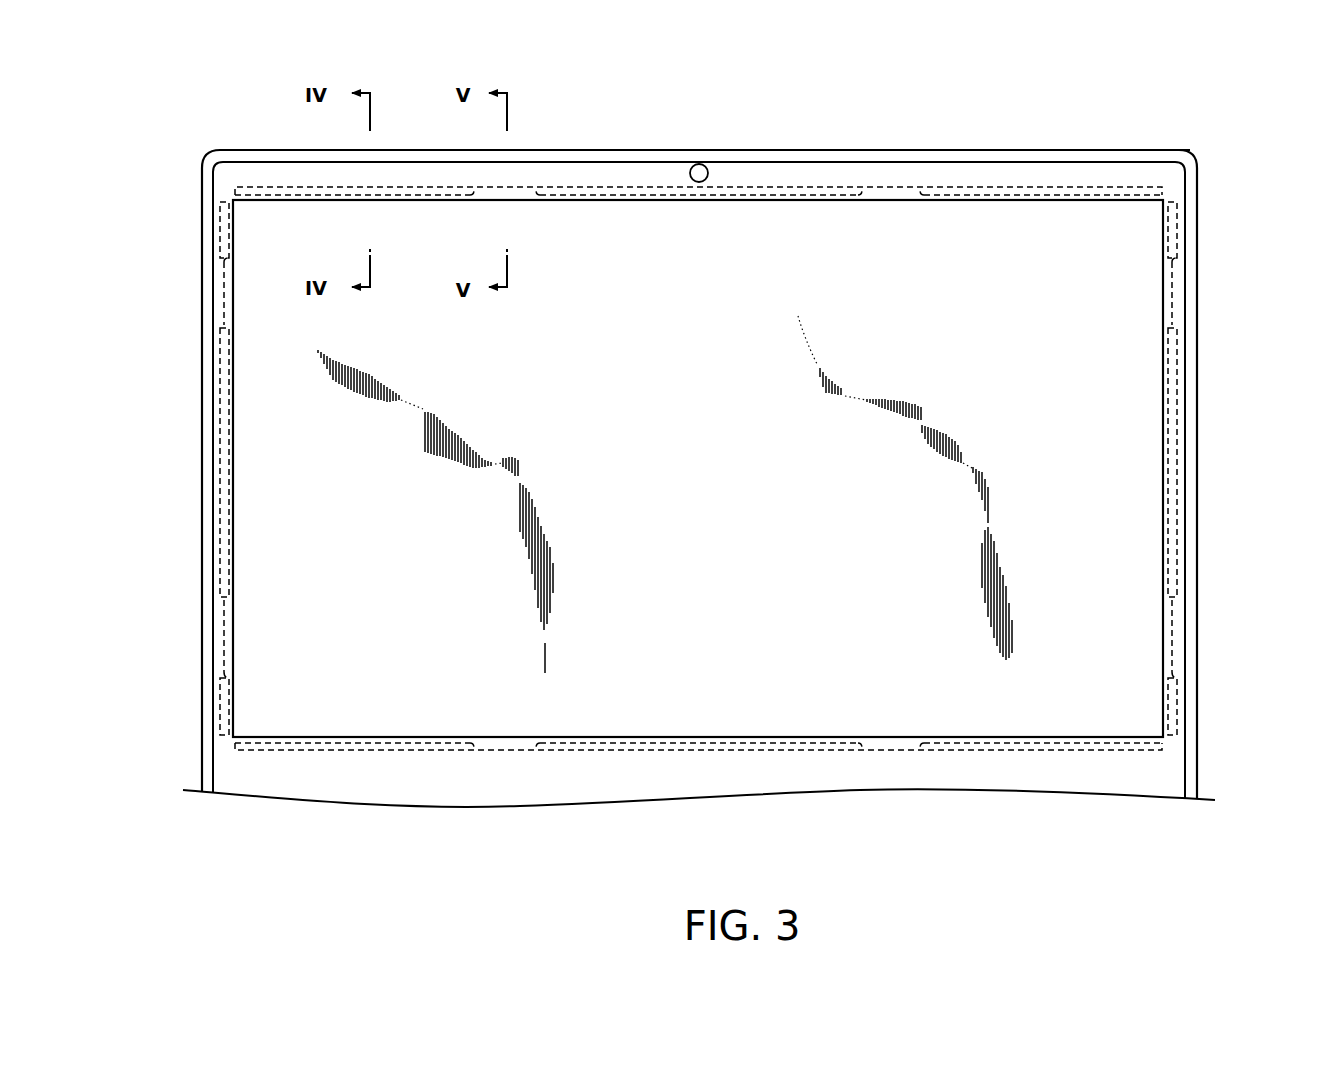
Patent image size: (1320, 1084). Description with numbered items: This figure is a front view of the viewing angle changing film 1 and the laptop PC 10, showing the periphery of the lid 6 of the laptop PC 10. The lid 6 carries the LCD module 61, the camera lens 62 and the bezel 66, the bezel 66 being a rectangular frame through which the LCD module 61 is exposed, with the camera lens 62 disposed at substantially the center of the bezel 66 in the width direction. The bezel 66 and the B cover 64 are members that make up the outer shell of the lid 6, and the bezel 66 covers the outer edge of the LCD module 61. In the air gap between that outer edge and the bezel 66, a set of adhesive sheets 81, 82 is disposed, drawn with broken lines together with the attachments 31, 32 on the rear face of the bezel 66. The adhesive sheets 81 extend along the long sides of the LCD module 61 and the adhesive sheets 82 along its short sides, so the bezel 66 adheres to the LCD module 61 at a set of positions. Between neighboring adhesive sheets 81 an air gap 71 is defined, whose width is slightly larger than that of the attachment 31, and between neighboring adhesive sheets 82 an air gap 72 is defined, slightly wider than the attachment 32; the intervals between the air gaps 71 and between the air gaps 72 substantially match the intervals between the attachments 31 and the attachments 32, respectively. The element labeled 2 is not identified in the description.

The laptop PC 10 is at (207, 116).
The lid 6 is at (1186, 139).
The B cover 64 is at (1195, 168).
The bezel 66 is at (1075, 163).
The viewing angle changing film 1 is at (1142, 454).
The cover window 2 is at (1143, 528).
The LCD module 61 is at (285, 512).
The camera lens 62 is at (706, 167).
The air gap 71 is at (473, 187).
The air gap 72 is at (222, 262).
The adhesive sheets 81 is at (305, 187).
The adhesive sheets 82 is at (220, 228).
The attachment 31 is at (520, 187).
The attachment 32 is at (216, 294).